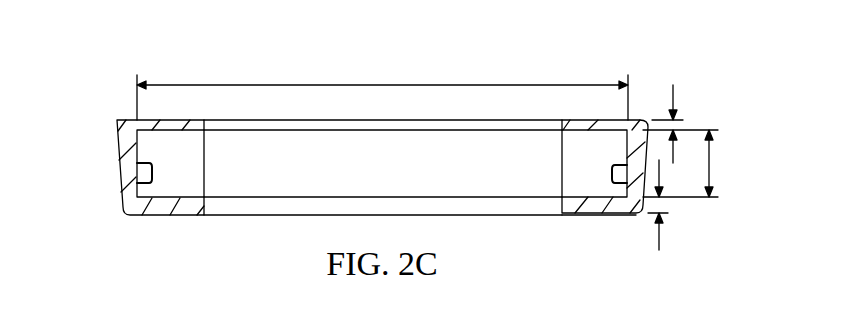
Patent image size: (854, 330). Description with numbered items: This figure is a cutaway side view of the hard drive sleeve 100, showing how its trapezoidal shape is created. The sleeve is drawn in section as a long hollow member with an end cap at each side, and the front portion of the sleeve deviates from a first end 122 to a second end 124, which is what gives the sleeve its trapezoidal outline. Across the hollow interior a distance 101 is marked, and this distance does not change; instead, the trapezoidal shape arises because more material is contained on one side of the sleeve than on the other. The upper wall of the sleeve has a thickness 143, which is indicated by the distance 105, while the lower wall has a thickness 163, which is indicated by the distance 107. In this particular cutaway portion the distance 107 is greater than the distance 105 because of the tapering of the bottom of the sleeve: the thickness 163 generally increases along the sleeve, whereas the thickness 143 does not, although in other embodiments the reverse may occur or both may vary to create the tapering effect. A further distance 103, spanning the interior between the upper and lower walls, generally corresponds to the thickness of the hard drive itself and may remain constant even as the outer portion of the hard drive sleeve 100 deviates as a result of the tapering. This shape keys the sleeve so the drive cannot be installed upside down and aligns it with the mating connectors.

The hard drive sleeve 100 is at (661, 62).
The distance 101 is at (381, 84).
The distance 103 is at (709, 165).
The distance 105 is at (673, 95).
The distance 107 is at (659, 236).
The first end 122 is at (114, 222).
The second end 124 is at (101, 128).
The thickness 143 is at (563, 125).
The thickness 163 is at (562, 207).